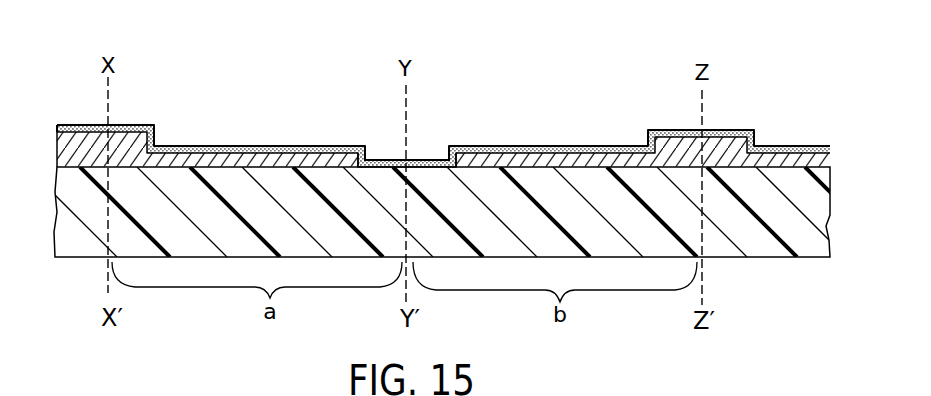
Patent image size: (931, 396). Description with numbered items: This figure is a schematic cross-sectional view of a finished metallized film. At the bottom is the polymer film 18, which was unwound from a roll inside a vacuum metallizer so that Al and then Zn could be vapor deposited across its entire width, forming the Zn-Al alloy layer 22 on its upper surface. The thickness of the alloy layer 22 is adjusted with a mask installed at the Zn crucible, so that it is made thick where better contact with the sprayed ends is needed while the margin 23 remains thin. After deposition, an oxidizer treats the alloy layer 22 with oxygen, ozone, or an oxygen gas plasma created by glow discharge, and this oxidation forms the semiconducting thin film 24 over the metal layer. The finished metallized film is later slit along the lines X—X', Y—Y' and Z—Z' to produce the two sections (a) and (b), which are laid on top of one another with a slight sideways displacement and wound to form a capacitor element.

The polymer film 18 is at (773, 250).
The Zn-Al alloy layer 22 is at (787, 165).
The margin 23 is at (395, 158).
The semiconducting thin film 24 is at (427, 158).